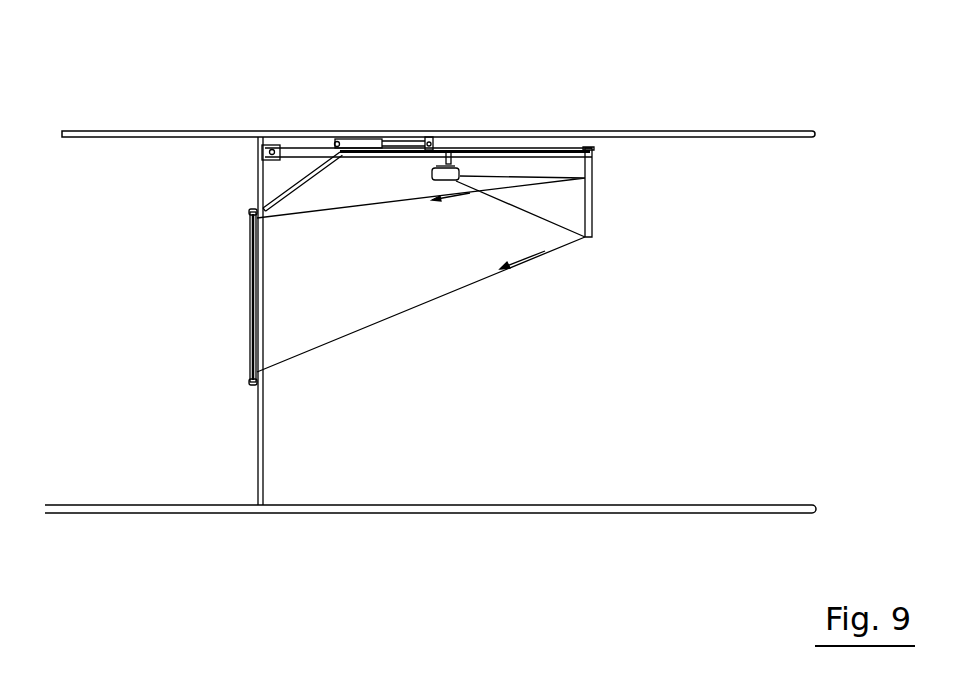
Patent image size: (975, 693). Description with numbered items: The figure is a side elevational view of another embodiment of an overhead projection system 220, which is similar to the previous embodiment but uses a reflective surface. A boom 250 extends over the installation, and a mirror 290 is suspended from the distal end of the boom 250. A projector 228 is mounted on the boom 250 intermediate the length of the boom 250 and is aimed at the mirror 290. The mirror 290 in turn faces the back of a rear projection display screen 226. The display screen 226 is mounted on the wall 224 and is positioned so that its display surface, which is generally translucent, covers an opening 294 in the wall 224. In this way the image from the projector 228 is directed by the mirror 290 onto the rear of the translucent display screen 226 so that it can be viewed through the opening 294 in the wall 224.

The overhead projection system 220 is at (485, 126).
The wall 224 is at (265, 437).
The rear projection display screen 226 is at (250, 284).
The projector 228 is at (440, 183).
The boom 250 is at (562, 139).
The mirror 290 is at (592, 208).
The opening 294 is at (276, 321).